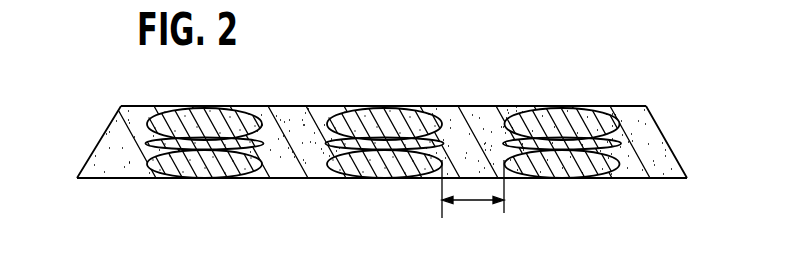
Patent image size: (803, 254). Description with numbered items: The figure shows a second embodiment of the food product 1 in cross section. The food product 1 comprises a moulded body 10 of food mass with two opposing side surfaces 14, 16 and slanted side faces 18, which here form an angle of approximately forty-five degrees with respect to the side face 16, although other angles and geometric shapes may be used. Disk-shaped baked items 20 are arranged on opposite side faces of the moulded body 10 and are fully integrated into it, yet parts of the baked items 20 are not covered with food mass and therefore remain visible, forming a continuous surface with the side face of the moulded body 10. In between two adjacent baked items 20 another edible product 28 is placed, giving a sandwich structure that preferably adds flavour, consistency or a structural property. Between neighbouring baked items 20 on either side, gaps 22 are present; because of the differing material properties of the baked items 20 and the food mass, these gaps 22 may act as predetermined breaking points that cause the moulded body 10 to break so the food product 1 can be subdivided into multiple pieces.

The food product 1 is at (386, 137).
The moulded body 10 is at (102, 157).
The side surface 14 is at (292, 106).
The side surface 16 is at (290, 178).
The side faces 18 is at (110, 122).
The baked items 20 is at (558, 107).
The gaps 22 is at (473, 197).
The edible product 28 is at (623, 144).